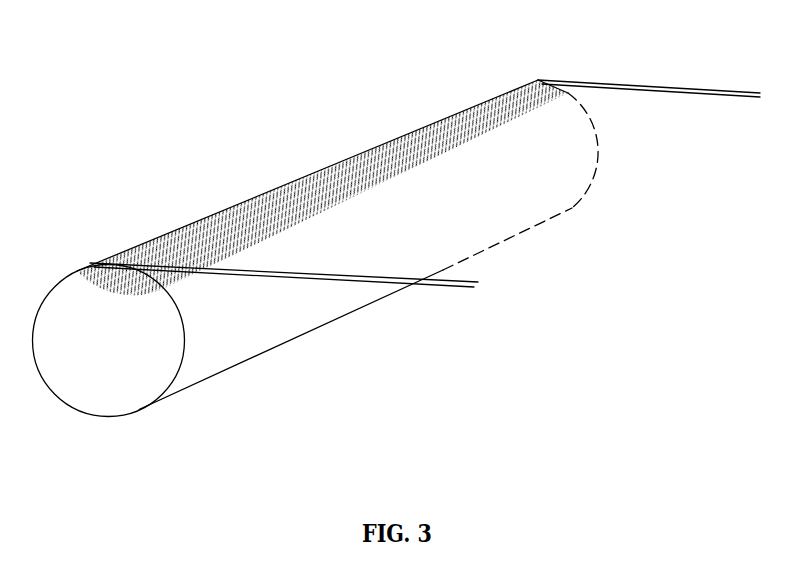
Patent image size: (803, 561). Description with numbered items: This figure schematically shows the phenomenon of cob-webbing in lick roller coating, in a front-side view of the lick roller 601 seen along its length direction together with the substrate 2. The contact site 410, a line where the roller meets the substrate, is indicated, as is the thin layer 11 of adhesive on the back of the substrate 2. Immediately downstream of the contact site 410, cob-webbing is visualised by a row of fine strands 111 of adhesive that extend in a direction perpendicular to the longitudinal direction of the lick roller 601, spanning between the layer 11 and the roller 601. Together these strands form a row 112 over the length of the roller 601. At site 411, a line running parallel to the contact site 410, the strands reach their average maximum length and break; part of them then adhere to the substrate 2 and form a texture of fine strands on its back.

The substrate 2 is at (700, 90).
The thin layer of adhesive 11 is at (287, 277).
The fine strands of adhesive 111 is at (191, 296).
The row of strands 112 is at (358, 190).
The contact site 410 is at (322, 187).
The site of strand breakage 411 is at (155, 290).
The lick roller 601 is at (95, 415).